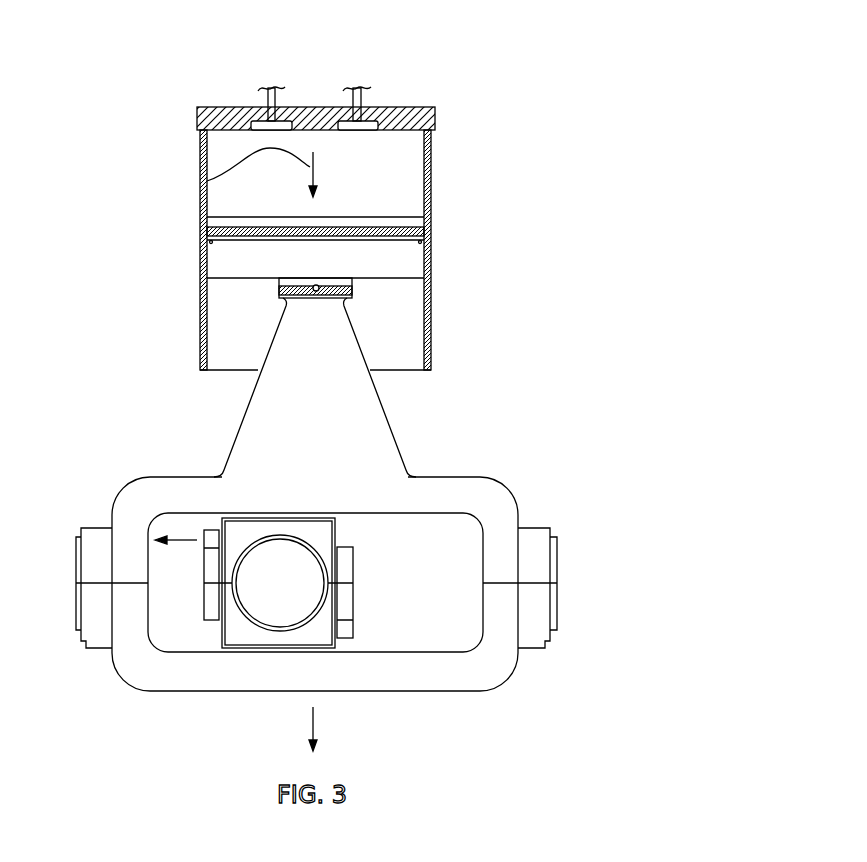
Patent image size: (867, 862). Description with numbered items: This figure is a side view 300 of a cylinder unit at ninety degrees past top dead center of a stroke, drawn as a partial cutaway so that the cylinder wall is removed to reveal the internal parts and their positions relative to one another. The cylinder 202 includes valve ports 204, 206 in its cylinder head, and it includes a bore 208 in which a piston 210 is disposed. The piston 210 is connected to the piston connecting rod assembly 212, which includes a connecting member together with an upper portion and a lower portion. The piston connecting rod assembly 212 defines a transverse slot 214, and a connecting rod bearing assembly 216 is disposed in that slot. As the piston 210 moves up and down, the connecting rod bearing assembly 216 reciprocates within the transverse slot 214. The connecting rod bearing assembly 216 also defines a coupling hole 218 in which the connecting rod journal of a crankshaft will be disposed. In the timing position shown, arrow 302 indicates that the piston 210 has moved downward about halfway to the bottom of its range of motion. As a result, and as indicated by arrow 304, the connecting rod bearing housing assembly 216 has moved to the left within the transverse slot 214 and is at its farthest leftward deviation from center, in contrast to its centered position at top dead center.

The side view 300 is at (738, 40).
The cylinder 202 is at (432, 192).
The valve port 204 is at (363, 95).
The valve port 206 is at (285, 95).
The bore 208 is at (402, 186).
The piston 210 is at (416, 256).
The piston connecting rod assembly 212 is at (388, 420).
The transverse slot 214 is at (440, 545).
The connecting rod bearing assembly 216 is at (245, 640).
The coupling hole 218 is at (290, 595).
The arrow 302 is at (207, 181).
The arrow 304 is at (186, 540).